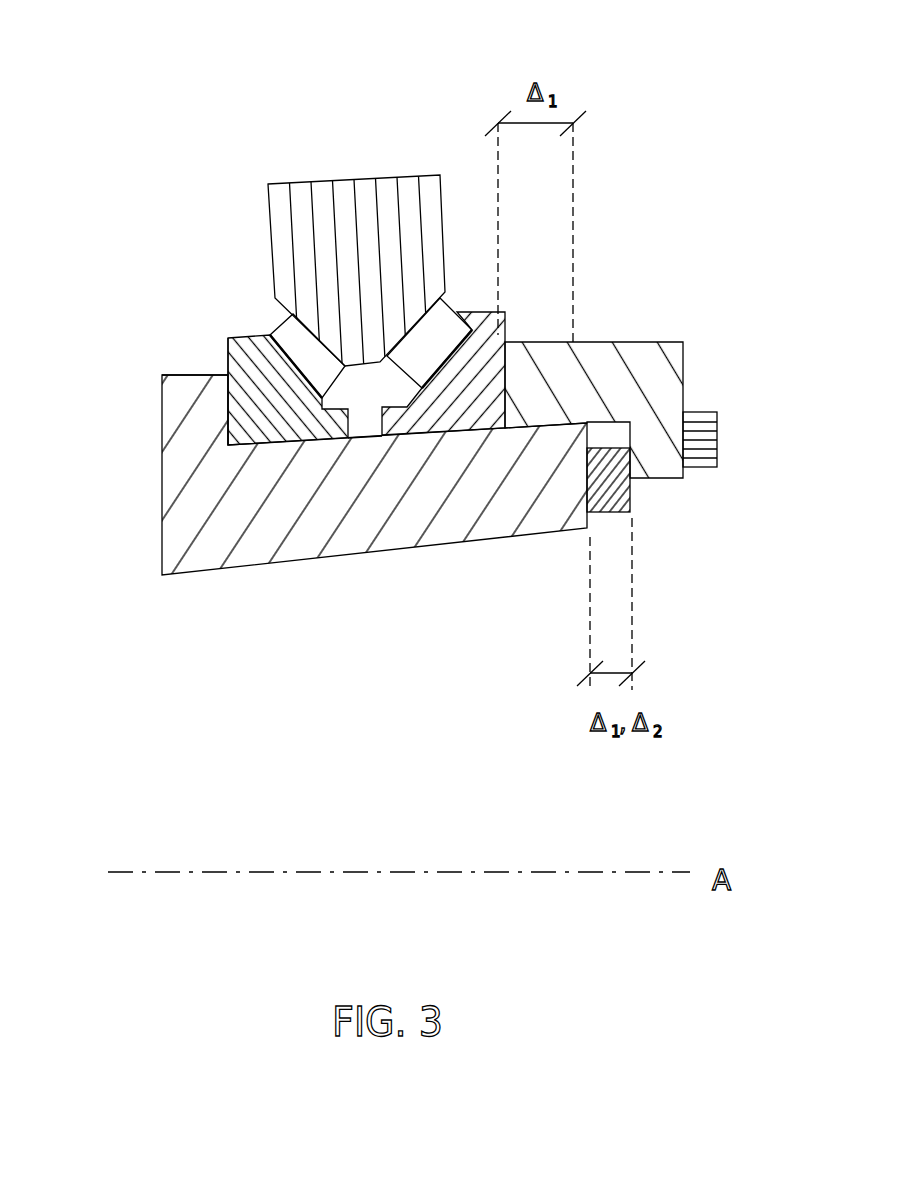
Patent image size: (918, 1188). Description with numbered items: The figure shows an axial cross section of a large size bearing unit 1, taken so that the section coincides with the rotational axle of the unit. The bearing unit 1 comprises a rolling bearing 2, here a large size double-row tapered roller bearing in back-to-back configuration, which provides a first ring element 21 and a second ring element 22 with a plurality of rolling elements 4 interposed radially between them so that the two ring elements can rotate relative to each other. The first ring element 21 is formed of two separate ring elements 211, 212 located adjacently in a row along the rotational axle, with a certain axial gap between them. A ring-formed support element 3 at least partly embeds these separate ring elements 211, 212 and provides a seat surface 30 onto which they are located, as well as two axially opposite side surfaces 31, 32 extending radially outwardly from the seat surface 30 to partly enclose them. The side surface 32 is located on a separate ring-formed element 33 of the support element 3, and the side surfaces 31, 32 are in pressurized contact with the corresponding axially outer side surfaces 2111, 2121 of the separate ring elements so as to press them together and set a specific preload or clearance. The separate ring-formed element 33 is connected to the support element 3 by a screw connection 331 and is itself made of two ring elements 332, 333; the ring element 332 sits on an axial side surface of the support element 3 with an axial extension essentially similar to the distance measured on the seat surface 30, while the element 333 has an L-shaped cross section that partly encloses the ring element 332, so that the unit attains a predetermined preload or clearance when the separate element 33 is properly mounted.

The large size bearing unit 1 is at (155, 98).
The rolling bearing 2 is at (356, 228).
The second ring element 22 is at (365, 178).
The rolling elements 4 is at (268, 330).
The first ring element 21 is at (190, 351).
The separate ring element 211 is at (250, 367).
The axially outer side surface 2111 is at (228, 394).
The separate ring element 212 is at (480, 334).
The ring-formed support element 3 is at (230, 527).
The seat surface 30 is at (367, 440).
The axially opposite side surface 31 is at (164, 418).
The axially opposite side surface 32 is at (566, 366).
The axially outer side surface 2121 is at (508, 370).
The separate ring-formed element 33 is at (685, 370).
The ring element 333 is at (650, 393).
The screw connection 331 is at (717, 440).
The ring element 332 is at (630, 513).